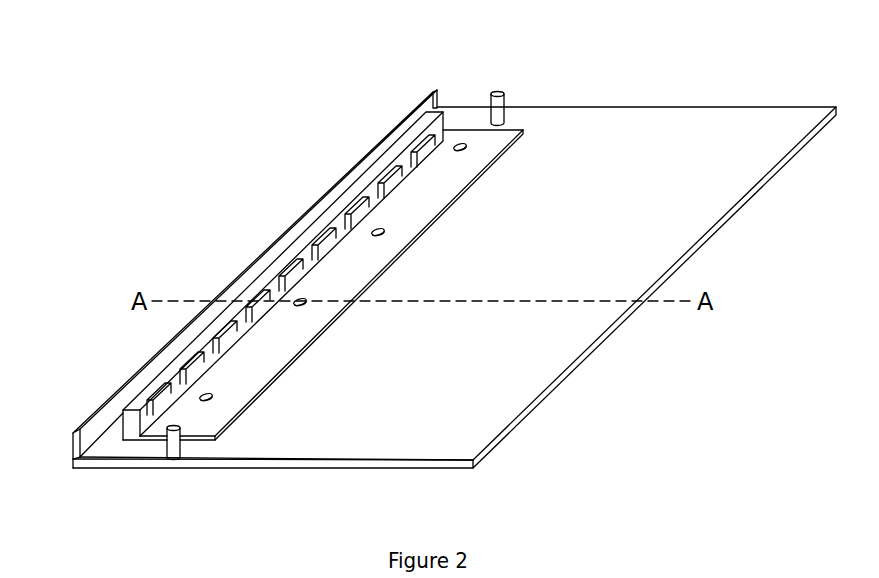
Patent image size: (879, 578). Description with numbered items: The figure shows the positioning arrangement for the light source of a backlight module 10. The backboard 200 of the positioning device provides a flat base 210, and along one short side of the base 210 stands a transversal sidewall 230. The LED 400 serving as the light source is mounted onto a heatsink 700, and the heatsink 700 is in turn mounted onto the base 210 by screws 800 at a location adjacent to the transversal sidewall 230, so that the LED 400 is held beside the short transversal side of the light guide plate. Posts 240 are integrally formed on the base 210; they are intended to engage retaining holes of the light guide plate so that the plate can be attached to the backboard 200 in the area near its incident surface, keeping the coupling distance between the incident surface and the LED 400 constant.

The backlight module 10 is at (368, 80).
The backboard 200 is at (73, 468).
The base 210 is at (282, 470).
The transversal sidewall 230 is at (247, 268).
The post 240 is at (504, 97).
The LED 400 is at (185, 372).
The heatsink 700 is at (388, 264).
The screw 800 is at (210, 396).